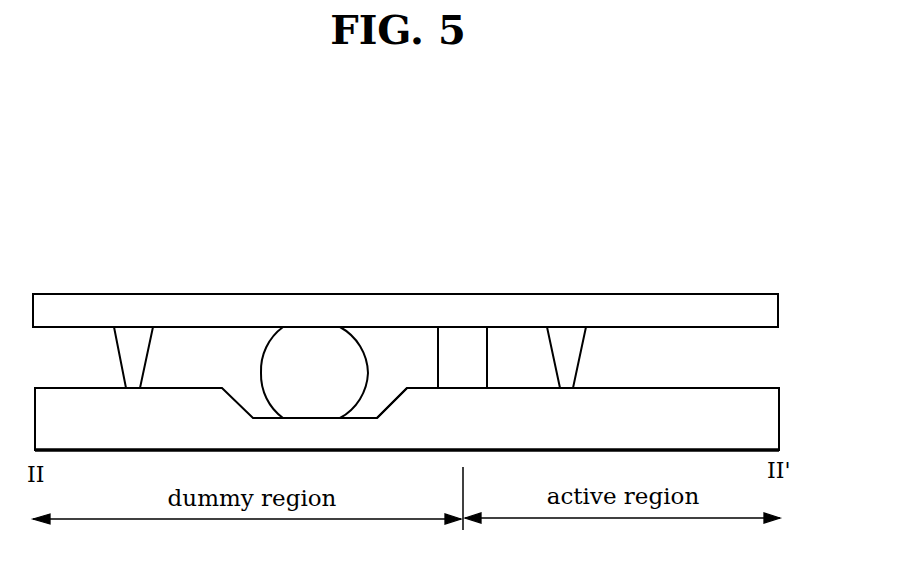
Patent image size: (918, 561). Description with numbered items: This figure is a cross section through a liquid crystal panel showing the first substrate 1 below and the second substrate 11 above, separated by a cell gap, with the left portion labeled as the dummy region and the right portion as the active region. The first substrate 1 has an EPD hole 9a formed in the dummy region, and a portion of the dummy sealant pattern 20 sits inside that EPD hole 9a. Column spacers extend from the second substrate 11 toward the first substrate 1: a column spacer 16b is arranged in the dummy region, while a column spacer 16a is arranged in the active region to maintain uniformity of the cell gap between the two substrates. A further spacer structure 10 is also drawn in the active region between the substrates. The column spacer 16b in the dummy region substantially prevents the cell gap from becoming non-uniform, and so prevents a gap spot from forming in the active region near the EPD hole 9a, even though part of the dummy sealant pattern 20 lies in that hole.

The first substrate 1 is at (772, 420).
The second substrate 11 is at (772, 307).
The EPD hole 9a is at (373, 412).
The column spacer in active region 10 is at (460, 338).
The column spacer 16a is at (568, 338).
The column spacer 16b is at (133, 338).
The dummy sealant pattern 20 is at (313, 338).